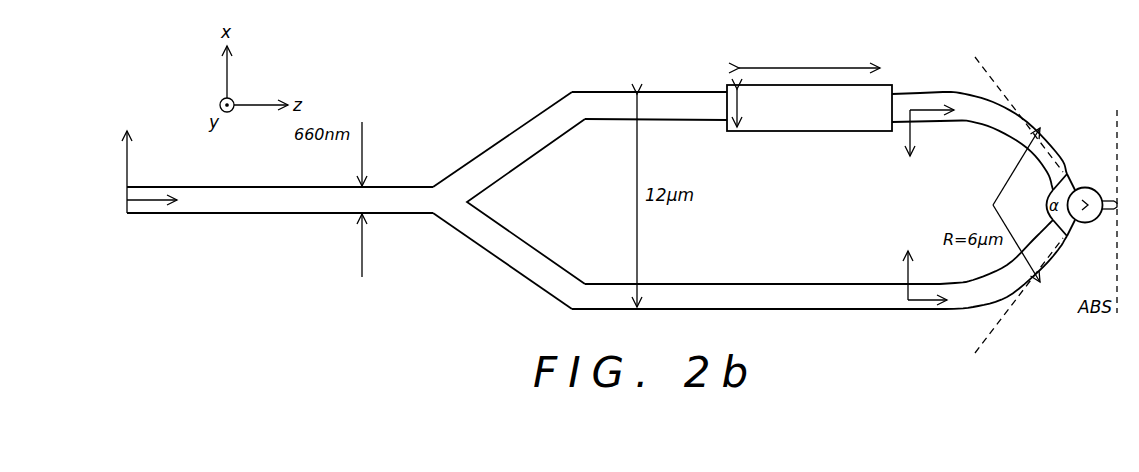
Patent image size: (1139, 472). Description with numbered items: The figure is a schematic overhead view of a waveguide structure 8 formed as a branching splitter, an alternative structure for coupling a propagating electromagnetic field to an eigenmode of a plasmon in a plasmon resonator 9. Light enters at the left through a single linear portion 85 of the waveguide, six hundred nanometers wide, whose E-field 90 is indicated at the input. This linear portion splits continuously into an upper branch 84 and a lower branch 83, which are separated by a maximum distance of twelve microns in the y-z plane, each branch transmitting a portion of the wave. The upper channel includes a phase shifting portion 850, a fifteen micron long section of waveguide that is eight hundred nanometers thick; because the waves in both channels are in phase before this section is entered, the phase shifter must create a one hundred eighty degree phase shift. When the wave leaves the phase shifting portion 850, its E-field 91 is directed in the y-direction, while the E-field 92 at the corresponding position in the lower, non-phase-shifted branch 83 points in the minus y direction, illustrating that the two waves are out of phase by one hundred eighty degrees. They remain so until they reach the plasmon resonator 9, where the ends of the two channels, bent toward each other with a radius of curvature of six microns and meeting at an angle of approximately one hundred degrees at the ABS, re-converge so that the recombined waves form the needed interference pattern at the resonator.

The waveguide structure 8 is at (482, 125).
The single linear portion of the waveguide 85 is at (253, 201).
The upper branch 84 is at (560, 121).
The lower branch 83 is at (560, 285).
The phase shifting portion 850 is at (855, 63).
The E-field 90 is at (150, 139).
The E-field 91 is at (902, 136).
The E-field 92 is at (895, 272).
The plasmon resonator 9 is at (1091, 186).